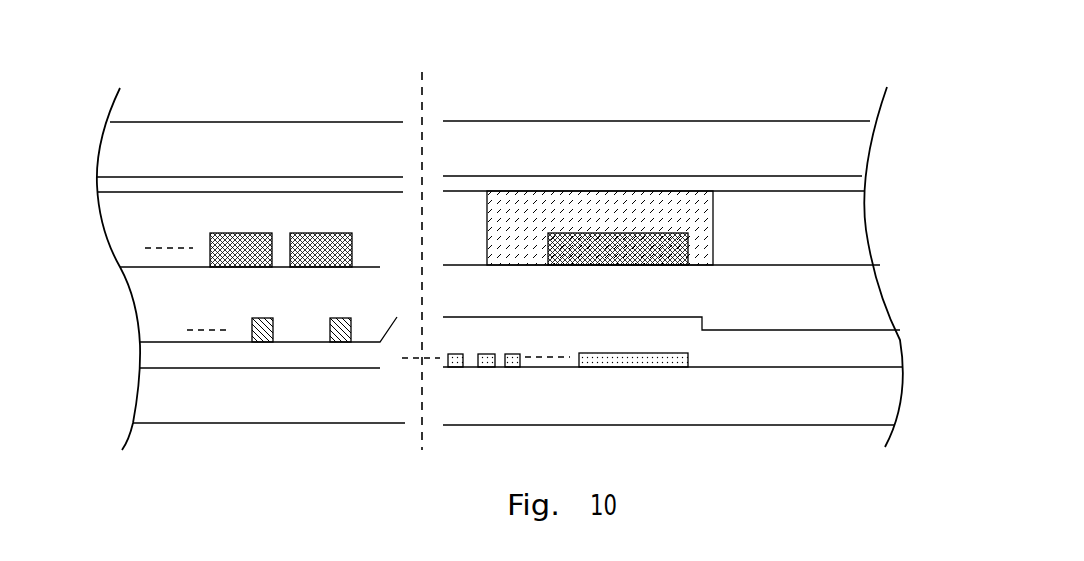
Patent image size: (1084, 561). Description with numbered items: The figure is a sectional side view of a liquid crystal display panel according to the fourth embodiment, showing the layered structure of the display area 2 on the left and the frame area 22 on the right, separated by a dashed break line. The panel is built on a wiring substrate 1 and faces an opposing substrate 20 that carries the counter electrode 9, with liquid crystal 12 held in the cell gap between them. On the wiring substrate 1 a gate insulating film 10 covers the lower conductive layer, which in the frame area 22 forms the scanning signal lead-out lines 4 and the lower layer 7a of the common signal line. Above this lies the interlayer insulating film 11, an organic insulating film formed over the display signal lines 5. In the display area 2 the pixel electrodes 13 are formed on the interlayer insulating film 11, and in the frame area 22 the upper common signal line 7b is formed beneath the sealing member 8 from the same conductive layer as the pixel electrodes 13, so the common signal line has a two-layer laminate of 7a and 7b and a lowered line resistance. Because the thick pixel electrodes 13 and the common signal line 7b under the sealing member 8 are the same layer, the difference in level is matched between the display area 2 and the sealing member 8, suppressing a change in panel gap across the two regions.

The wiring substrate 1 is at (317, 423).
The display area 2 is at (328, 68).
The frame area 22 is at (689, 68).
The scanning signal lead-out line 4 is at (525, 375).
The display signal line 5 is at (362, 320).
The common signal line lower layer 7a is at (617, 360).
The common signal line upper layer 7b is at (615, 265).
The sealing member 8 is at (617, 207).
The counter electrode 9 is at (233, 182).
The gate insulating film 10 is at (762, 357).
The interlayer insulating film 11 is at (872, 302).
The liquid crystal 12 is at (360, 203).
The pixel electrode 13 is at (360, 233).
The opposing substrate 20 is at (290, 133).